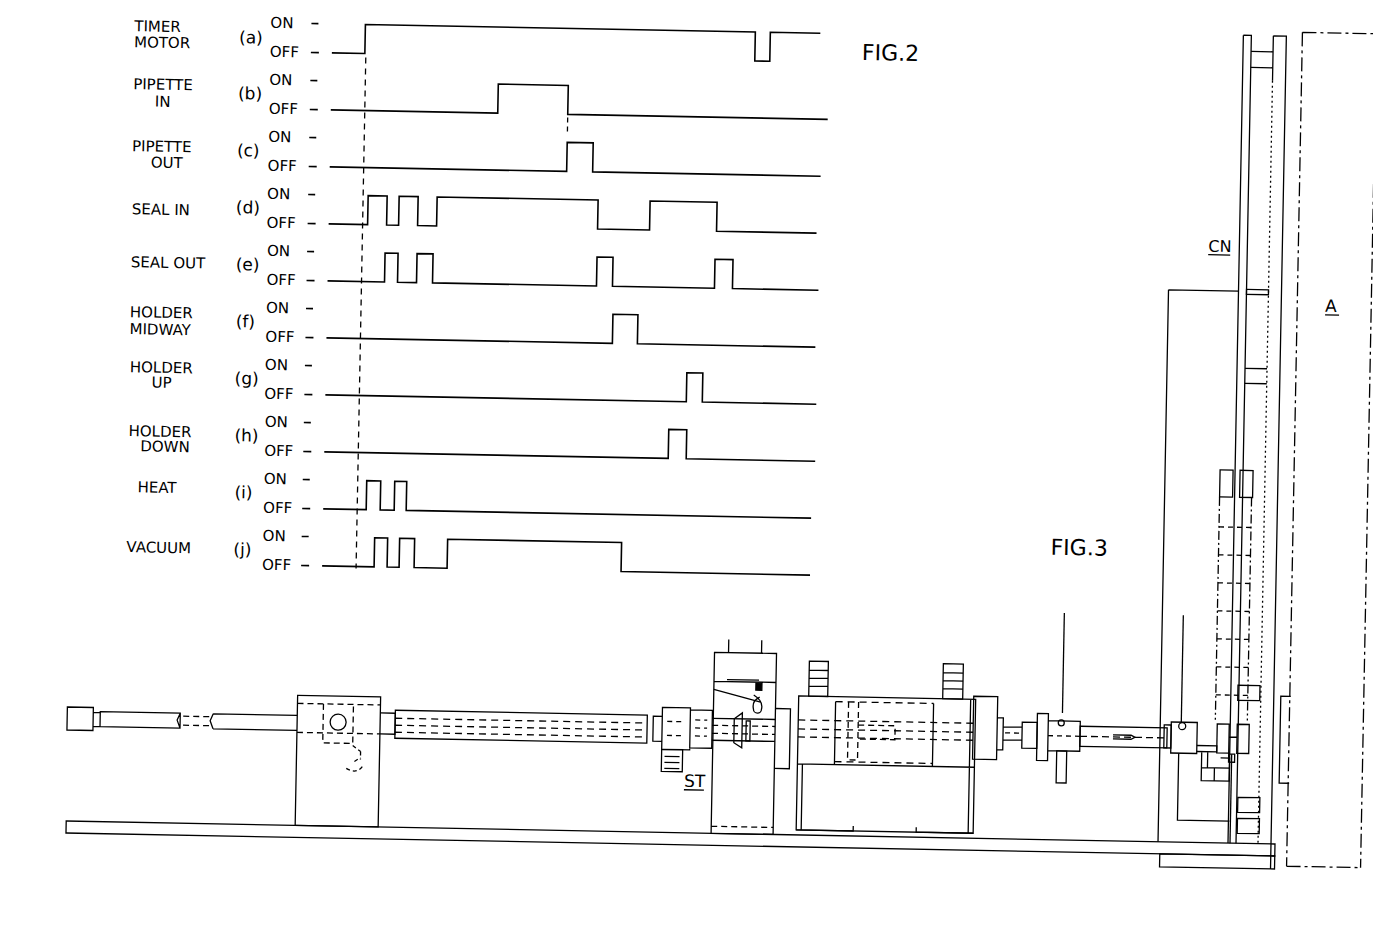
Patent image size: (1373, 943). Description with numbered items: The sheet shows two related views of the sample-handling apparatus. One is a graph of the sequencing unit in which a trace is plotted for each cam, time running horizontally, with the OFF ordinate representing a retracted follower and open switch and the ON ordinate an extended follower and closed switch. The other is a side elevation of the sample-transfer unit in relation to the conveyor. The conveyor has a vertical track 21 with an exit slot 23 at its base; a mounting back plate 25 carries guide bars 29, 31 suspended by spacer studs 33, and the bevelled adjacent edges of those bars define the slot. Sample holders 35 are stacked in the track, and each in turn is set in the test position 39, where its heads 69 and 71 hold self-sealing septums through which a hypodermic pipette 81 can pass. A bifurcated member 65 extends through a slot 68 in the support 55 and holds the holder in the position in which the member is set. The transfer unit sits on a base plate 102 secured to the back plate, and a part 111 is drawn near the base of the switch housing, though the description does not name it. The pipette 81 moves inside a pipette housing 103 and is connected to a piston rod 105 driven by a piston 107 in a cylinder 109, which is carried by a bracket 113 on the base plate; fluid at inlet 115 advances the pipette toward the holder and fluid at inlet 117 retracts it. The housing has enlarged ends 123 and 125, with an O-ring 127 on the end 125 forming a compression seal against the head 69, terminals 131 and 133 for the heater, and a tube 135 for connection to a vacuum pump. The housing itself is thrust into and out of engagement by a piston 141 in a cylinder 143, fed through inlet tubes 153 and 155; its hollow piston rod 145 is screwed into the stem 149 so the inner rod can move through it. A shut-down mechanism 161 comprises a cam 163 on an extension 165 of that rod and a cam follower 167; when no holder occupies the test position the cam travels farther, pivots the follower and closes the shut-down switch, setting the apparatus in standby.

The vertical track 21 is at (1262, 277).
The exit slot 23 is at (1238, 789).
The mounting back plate 25 is at (1272, 175).
The guide bar 29 is at (1234, 172).
The guide bar 31 is at (1240, 820).
The spacer studs 33 is at (1250, 40).
The sample holder 35 is at (1205, 496).
The test position 39 is at (1297, 729).
The support 55 is at (1164, 587).
The bifurcated member 65 is at (1198, 755).
The slot 68 is at (1184, 804).
The head 69 is at (1214, 468).
The head 71 is at (1253, 473).
The hypodermic pipette 81 is at (1104, 719).
The base plate 102 is at (604, 835).
The pipette holder or housing 103 is at (1123, 759).
The piston rod 105 is at (241, 723).
The piston 107 is at (406, 744).
The cylinder 109 is at (470, 718).
The switch housing base 111 is at (718, 812).
The bracket 113 is at (302, 806).
The fluid inlet 115 is at (357, 770).
The fluid inlet 117 is at (670, 768).
The enlarged cylindrical end 123 is at (1065, 744).
The enlarged cylindrical end 125 is at (1172, 743).
The O-ring 127 is at (1201, 710).
The terminal 131 is at (1064, 707).
The terminal 133 is at (1172, 703).
The tube 135 is at (1062, 770).
The piston 141 is at (858, 695).
The cylinder 143 is at (908, 789).
The piston rod 145 is at (874, 744).
The stem 149 is at (1032, 717).
The inlet tube 153 is at (818, 657).
The inlet tube 155 is at (956, 656).
The shut-down mechanism 161 is at (712, 682).
The cam 163 is at (738, 748).
The extension 165 is at (757, 738).
The cam follower 167 is at (768, 698).